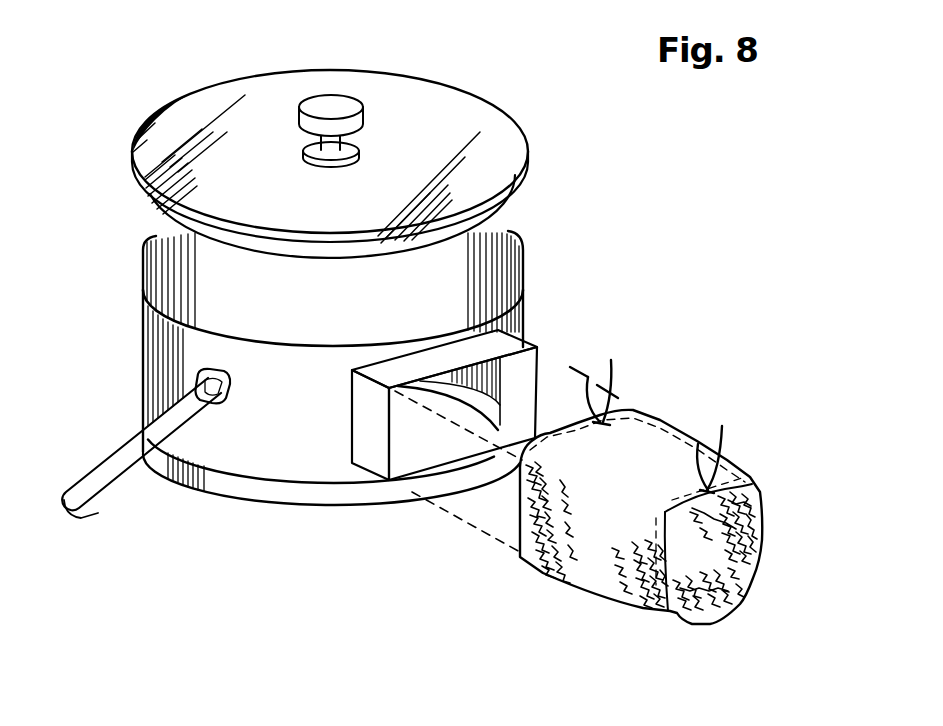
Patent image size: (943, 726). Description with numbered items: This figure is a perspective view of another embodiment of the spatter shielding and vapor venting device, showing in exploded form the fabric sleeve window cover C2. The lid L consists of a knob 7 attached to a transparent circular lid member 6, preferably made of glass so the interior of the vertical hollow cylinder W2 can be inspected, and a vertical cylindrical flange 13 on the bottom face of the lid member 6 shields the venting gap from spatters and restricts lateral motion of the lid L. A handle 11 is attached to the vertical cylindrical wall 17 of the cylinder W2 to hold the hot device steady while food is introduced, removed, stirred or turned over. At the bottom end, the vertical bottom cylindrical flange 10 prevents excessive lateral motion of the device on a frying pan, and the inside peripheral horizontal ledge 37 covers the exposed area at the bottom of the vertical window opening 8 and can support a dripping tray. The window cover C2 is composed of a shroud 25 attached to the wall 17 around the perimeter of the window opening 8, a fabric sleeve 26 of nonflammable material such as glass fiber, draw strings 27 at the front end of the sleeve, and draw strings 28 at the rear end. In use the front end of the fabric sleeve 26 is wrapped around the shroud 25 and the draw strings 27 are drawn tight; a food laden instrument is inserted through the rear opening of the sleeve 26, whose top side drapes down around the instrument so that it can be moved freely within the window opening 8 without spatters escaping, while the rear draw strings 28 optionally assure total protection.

The lid L is at (155, 103).
The lid member 6 is at (517, 139).
The knob 7 is at (353, 100).
The vertical cylindrical flange 13 is at (493, 213).
The cooking vessel W2 is at (131, 338).
The vertical cylindrical wall 17 is at (527, 300).
The vertical bottom cylindrical flange 10 is at (372, 503).
The handle 11 is at (117, 502).
The shroud 25 is at (515, 343).
The inside peripheral horizontal ledge 37 is at (540, 350).
The vertical window opening 8 is at (483, 458).
The window cover C2 is at (649, 398).
The fabric sleeve 26 is at (648, 447).
The draw strings 27 is at (593, 378).
The draw strings 28 is at (698, 443).